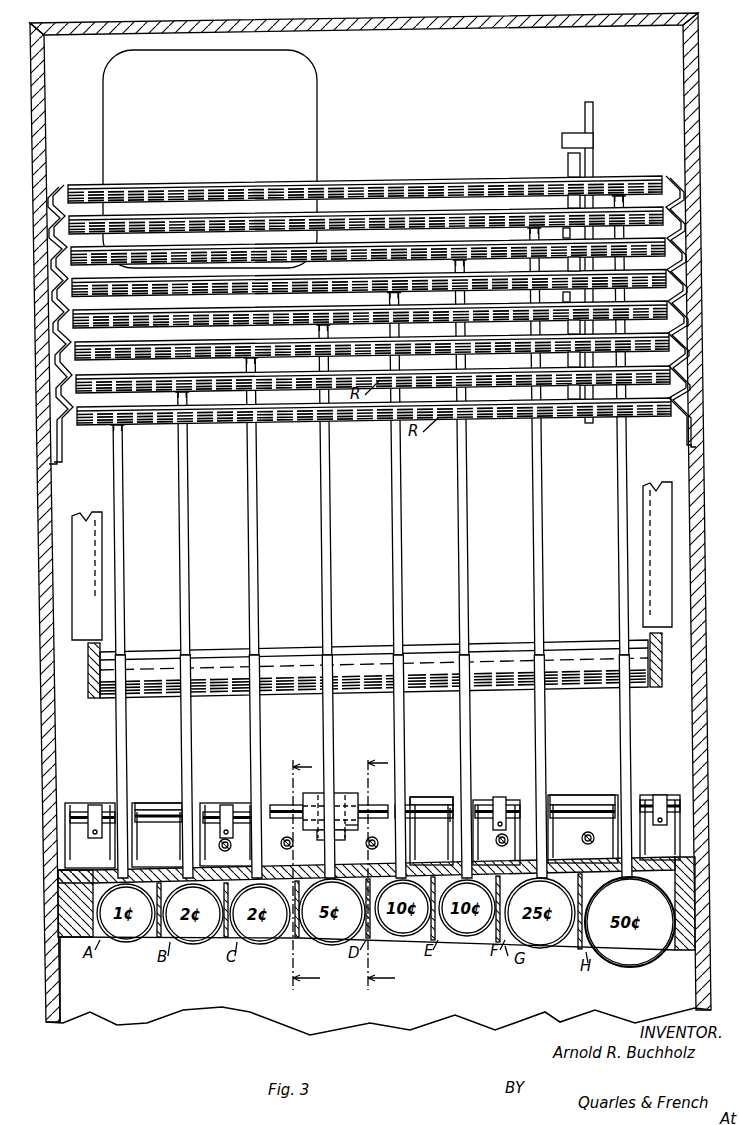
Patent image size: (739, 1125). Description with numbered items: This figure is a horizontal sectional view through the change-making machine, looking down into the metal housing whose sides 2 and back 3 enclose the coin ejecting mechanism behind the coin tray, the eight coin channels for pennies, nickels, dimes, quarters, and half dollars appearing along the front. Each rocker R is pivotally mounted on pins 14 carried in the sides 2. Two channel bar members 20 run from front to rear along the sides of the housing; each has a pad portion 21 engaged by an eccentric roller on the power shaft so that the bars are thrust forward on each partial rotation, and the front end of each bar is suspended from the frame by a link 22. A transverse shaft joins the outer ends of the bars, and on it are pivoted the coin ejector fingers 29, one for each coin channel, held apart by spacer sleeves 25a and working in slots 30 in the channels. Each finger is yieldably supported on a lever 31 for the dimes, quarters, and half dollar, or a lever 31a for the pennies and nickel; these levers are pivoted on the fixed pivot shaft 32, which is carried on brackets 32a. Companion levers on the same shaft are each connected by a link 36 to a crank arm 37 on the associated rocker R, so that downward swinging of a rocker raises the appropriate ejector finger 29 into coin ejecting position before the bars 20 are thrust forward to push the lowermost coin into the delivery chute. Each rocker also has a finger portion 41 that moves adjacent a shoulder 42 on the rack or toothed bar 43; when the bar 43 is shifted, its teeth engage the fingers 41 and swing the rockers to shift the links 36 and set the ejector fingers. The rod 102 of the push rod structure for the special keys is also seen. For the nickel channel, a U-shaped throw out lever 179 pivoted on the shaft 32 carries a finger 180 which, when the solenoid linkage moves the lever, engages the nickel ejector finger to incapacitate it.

The sides 2 is at (44, 147).
The back 3 is at (478, 24).
The pins 14 is at (56, 466).
The channel bar members 20 is at (86, 512).
The pad portions 21 is at (312, 868).
The links 22 is at (88, 680).
The spacer sleeves 25a is at (470, 650).
The coin ejector fingers 29 is at (117, 746).
The slots 30 is at (142, 875).
The lever 31 is at (412, 805).
The lever 31a is at (108, 800).
The fixed pivot shaft 32 is at (445, 812).
The brackets 32a is at (92, 808).
The link 36 is at (222, 552).
The crank arm 37 is at (186, 396).
The finger portion 41 is at (566, 160).
The shoulder 42 is at (570, 140).
The rack or toothed bar 43 is at (593, 115).
The rod 102 is at (238, 850).
The U-shaped throw out lever 179 is at (340, 800).
The finger 180 is at (350, 832).